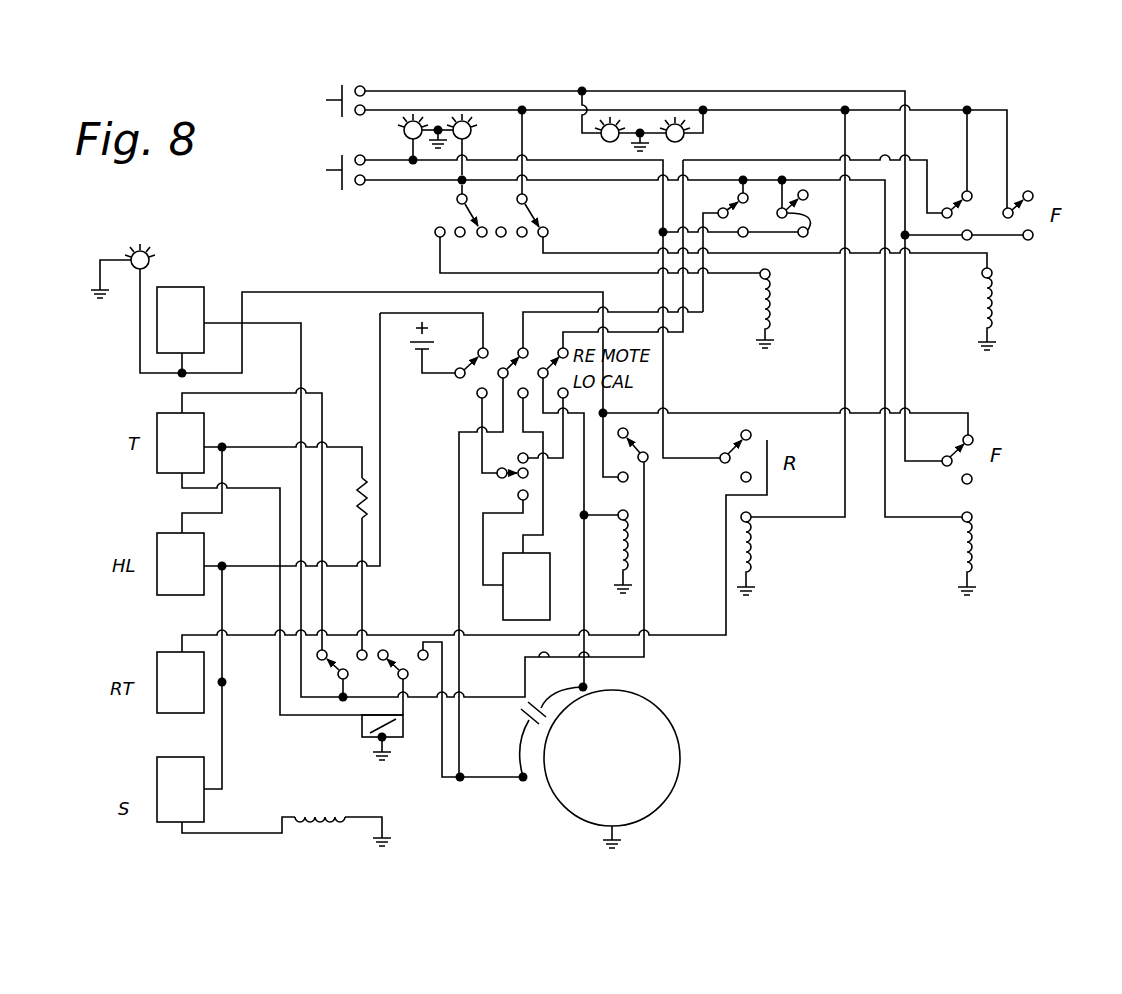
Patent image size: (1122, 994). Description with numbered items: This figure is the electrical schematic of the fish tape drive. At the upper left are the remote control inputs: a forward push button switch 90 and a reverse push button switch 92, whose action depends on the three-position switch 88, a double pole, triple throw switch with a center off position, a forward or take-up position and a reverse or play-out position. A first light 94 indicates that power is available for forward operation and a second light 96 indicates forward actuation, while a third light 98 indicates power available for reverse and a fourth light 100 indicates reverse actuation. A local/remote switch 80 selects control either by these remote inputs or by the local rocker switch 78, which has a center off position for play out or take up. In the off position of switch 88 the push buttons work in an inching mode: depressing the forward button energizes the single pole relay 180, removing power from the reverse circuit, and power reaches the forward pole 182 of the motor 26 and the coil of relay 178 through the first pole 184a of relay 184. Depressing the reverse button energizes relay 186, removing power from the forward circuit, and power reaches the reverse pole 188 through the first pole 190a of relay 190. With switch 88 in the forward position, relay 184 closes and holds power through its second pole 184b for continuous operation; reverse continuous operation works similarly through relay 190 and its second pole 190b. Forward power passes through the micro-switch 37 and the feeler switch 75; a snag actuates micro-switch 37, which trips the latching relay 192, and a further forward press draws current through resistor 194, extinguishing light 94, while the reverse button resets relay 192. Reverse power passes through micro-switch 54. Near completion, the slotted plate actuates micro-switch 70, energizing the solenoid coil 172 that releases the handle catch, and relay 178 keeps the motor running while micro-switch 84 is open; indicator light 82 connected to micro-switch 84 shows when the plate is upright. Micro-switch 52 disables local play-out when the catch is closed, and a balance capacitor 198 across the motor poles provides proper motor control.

The forward push button switch 90 is at (336, 84).
The reverse push button switch 92 is at (340, 193).
The third light 98 is at (404, 131).
The fourth light 100 is at (471, 133).
The first light 94 is at (601, 133).
The second light 96 is at (684, 136).
The three-position switch 88 is at (438, 211).
The first pole of relay 190 190a is at (717, 214).
The second pole of relay 190 190b is at (808, 237).
The relay 190 is at (776, 284).
The relay 184 is at (1014, 273).
The first pole of relay 184 184a is at (970, 215).
The second pole of relay 184 184b is at (1033, 195).
The indicator light 82 is at (149, 259).
The micro-switch 84 is at (204, 287).
The micro-switch 37 is at (157, 414).
The feeler switch 75 is at (157, 534).
The micro-switch 54 is at (157, 653).
The micro-switch 70 is at (157, 770).
The adjustment means 172 is at (318, 810).
The latching relay 192 is at (352, 727).
The resistor 194 is at (372, 500).
The local/remote switch 80 is at (458, 386).
The rocker switch 78 is at (507, 486).
The micro-switch 52 is at (551, 562).
The relay 178 is at (615, 548).
The balance capacitor 198 is at (525, 711).
The forward pole of the motor 182 is at (590, 689).
The reverse pole of the motor 188 is at (522, 783).
The motor 26 is at (681, 729).
The single pole relay 180 is at (770, 528).
The relay 186 is at (988, 524).